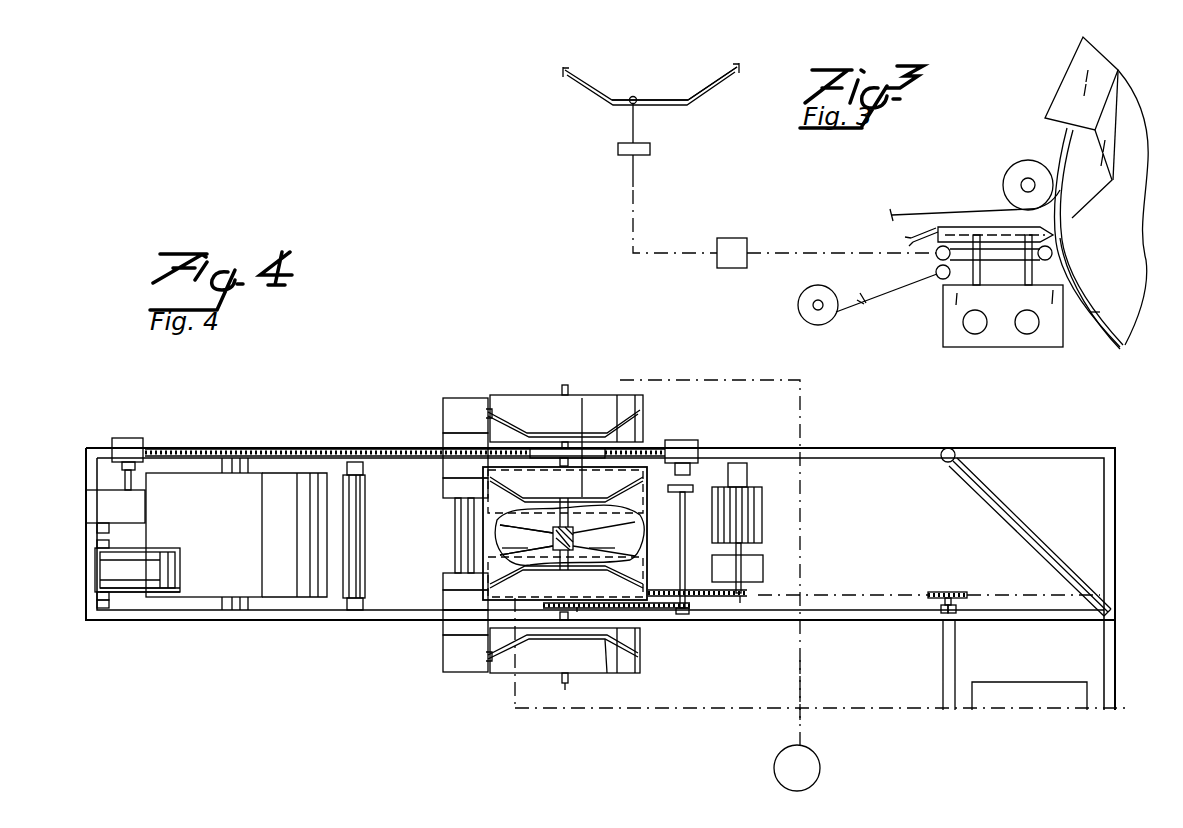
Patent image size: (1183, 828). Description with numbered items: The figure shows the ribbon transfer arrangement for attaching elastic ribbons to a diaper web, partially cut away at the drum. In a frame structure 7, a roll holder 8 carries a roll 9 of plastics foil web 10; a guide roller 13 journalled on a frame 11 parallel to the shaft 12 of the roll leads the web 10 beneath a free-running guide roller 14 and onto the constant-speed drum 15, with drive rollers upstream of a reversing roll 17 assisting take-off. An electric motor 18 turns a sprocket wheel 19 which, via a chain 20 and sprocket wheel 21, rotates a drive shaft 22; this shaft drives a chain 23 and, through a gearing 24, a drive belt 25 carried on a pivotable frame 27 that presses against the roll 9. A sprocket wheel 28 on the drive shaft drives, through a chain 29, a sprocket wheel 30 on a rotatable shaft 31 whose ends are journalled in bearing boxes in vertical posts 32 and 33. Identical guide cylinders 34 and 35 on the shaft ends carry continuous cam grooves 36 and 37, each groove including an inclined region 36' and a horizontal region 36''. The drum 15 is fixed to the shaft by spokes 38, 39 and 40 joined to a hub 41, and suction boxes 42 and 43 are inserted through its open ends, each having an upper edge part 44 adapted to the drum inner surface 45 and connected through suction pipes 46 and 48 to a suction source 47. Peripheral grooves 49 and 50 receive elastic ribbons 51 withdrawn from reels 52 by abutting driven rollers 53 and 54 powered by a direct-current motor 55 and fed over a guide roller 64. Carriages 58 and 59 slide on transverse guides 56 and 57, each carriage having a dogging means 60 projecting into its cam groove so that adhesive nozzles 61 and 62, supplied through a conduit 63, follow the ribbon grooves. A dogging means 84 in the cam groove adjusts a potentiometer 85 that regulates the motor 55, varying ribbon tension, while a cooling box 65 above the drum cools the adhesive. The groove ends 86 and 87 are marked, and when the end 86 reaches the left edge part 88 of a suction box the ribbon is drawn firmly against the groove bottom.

In FIG. 4, the frame structure 7 is at (879, 457).
In FIG. 4, the roll holder 8 is at (228, 458).
In FIG. 4, the roll 9 is at (196, 473).
In FIG. 3, the plastics foil web 10 is at (915, 214).
In FIG. 4, the frame 11 is at (352, 611).
In FIG. 4, the shaft 12 is at (228, 606).
In FIG. 4, the guide roller 13 is at (358, 564).
In FIG. 3, the guide roller 14 is at (1022, 160).
In FIG. 3, the drum 15 is at (1083, 312).
In FIG. 4, the drum 15 is at (647, 533).
In FIG. 4, the reversing roll 17 is at (976, 470).
In FIG. 4, the electric motor 18 is at (761, 530).
In FIG. 4, the sprocket wheel 19 is at (748, 597).
In FIG. 4, the chain 20 is at (726, 598).
In FIG. 4, the sprocket wheel 21 is at (703, 597).
In FIG. 4, the drive shaft 22 is at (685, 535).
In FIG. 4, the chain 23 is at (298, 449).
In FIG. 4, the gearing 24 is at (92, 520).
In FIG. 4, the drive belt 25 is at (100, 568).
In FIG. 4, the frame 27 is at (128, 592).
In FIG. 4, the sprocket wheel 28 is at (684, 614).
In FIG. 4, the chain 29 is at (652, 609).
In FIG. 4, the sprocket wheel 30 is at (578, 612).
In FIG. 4, the rotatable shaft 31 is at (562, 684).
In FIG. 4, the vertical post 32 is at (540, 452).
In FIG. 4, the vertical post 33 is at (538, 616).
In FIG. 4, the guide cylinder 34 is at (617, 400).
In FIG. 4, the guide cylinder 35 is at (522, 665).
In FIG. 3, the cam groove 36 is at (645, 90).
In FIG. 4, the cam groove 36 is at (564, 402).
In FIG. 3, the inclined region of cam groove 36' is at (717, 91).
In FIG. 3, the horizontal region of cam groove 36'' is at (655, 70).
In FIG. 4, the cam groove 37 is at (633, 657).
In FIG. 4, the spoke 38 is at (518, 537).
In FIG. 4, the spoke 39 is at (605, 537).
In FIG. 4, the spoke 40 is at (632, 567).
In FIG. 4, the hub 41 is at (556, 552).
In FIG. 3, the suction box 42 is at (1130, 132).
In FIG. 4, the suction box 42 is at (496, 545).
In FIG. 4, the suction box 43 is at (627, 500).
In FIG. 3, the upper edge part 44 is at (1066, 140).
In FIG. 3, the inner surface 45 is at (1100, 302).
In FIG. 4, the suction pipe 46 is at (781, 708).
In FIG. 4, the suction source 47 is at (812, 754).
In FIG. 4, the suction pipe 48 is at (801, 680).
In FIG. 4, the groove 49 is at (582, 398).
In FIG. 4, the groove 50 is at (611, 648).
In FIG. 3, the elastic ribbon 51 is at (877, 295).
In FIG. 3, the reel 52 is at (802, 316).
In FIG. 3, the driven roller 53 is at (936, 257).
In FIG. 3, the driven roller 54 is at (938, 278).
In FIG. 3, the direct-current motor 55 is at (718, 246).
In FIG. 3, the guide 56 is at (1030, 334).
In FIG. 4, the guide 56 is at (470, 520).
In FIG. 3, the guide 57 is at (963, 322).
In FIG. 4, the guide 57 is at (457, 500).
In FIG. 3, the carriage 58 is at (1058, 338).
In FIG. 4, the carriage 58 is at (455, 578).
In FIG. 4, the carriage 59 is at (455, 430).
In FIG. 4, the dogging means 60 is at (490, 408).
In FIG. 3, the adhesive nozzle 61 is at (964, 226).
In FIG. 4, the adhesive nozzle 61 is at (455, 598).
In FIG. 4, the adhesive nozzle 62 is at (455, 478).
In FIG. 3, the conduit 63 is at (909, 238).
In FIG. 3, the guide roller 64 is at (1048, 261).
In FIG. 3, the cooling box 65 is at (1072, 66).
In FIG. 3, the dogging means 84 is at (642, 130).
In FIG. 3, the potentiometer 85 is at (616, 148).
In FIG. 4, the groove end 86 is at (690, 466).
In FIG. 4, the groove end 87 is at (480, 477).
In FIG. 3, the left edge part 88 is at (1105, 190).